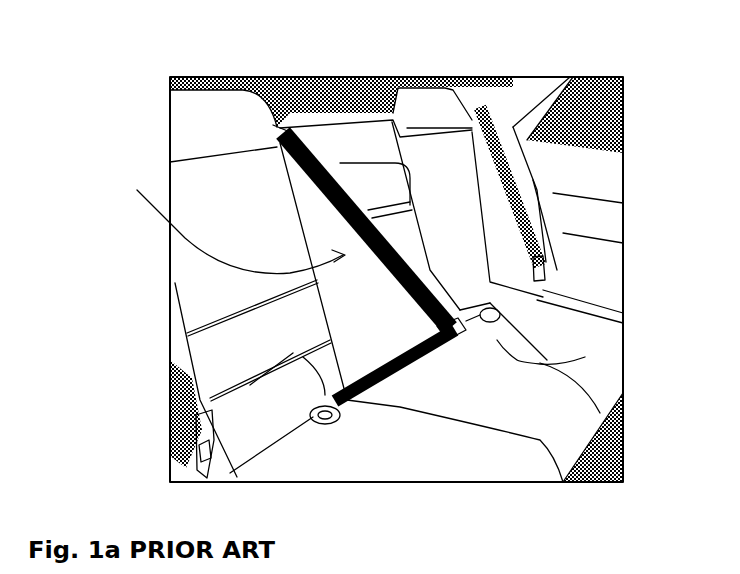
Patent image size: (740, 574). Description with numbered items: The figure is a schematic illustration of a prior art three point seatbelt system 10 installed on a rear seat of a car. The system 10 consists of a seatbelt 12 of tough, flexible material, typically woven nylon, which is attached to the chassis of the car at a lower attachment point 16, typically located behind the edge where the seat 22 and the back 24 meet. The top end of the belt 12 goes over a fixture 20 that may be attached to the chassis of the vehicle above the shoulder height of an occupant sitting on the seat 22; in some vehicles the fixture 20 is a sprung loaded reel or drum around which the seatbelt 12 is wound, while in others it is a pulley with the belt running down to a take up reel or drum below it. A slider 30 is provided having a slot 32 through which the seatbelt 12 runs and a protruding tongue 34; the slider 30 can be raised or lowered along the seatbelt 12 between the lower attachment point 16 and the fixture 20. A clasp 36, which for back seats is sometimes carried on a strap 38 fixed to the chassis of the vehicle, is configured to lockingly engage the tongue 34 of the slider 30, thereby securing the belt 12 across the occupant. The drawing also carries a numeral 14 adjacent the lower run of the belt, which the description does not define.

The three point seatbelt system 10 is at (230, 222).
The seatbelt 12 is at (310, 178).
The lap belt 14 is at (442, 358).
The lower attachment point 16 is at (378, 360).
The fixture 20 is at (281, 125).
The seat 22 is at (455, 392).
The back 24 is at (411, 199).
The slider 30 is at (545, 268).
The slot 32 is at (433, 332).
The tongue 34 is at (545, 277).
The clasp 36 is at (418, 377).
The strap 38 is at (478, 314).